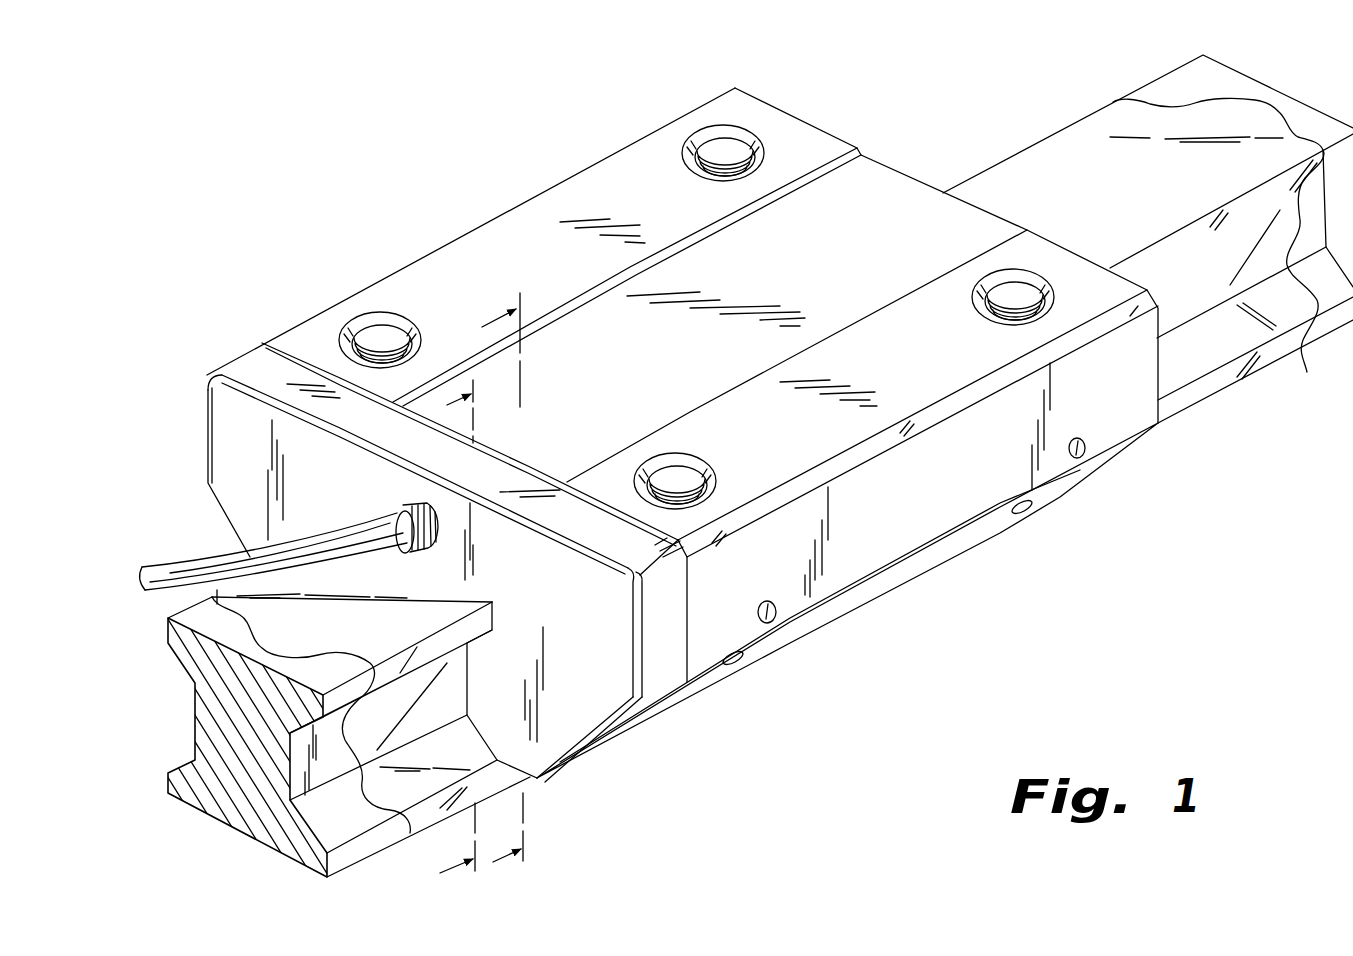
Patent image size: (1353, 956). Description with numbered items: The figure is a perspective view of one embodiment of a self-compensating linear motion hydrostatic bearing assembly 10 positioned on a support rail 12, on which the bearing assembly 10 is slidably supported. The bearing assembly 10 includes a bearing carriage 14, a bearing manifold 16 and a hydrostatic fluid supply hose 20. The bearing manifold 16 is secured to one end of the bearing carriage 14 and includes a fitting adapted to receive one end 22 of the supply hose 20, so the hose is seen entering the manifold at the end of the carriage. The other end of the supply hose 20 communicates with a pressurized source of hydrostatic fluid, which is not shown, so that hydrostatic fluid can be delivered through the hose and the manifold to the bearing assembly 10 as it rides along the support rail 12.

The self-compensating linear motion hydrostatic bearing assembly 10 is at (518, 148).
The support rail 12 is at (1153, 89).
The bearing carriage 14 is at (460, 250).
The bearing manifold 16 is at (232, 373).
The hydrostatic fluid supply hose 20 is at (170, 574).
The end of supply hose 22 is at (400, 508).